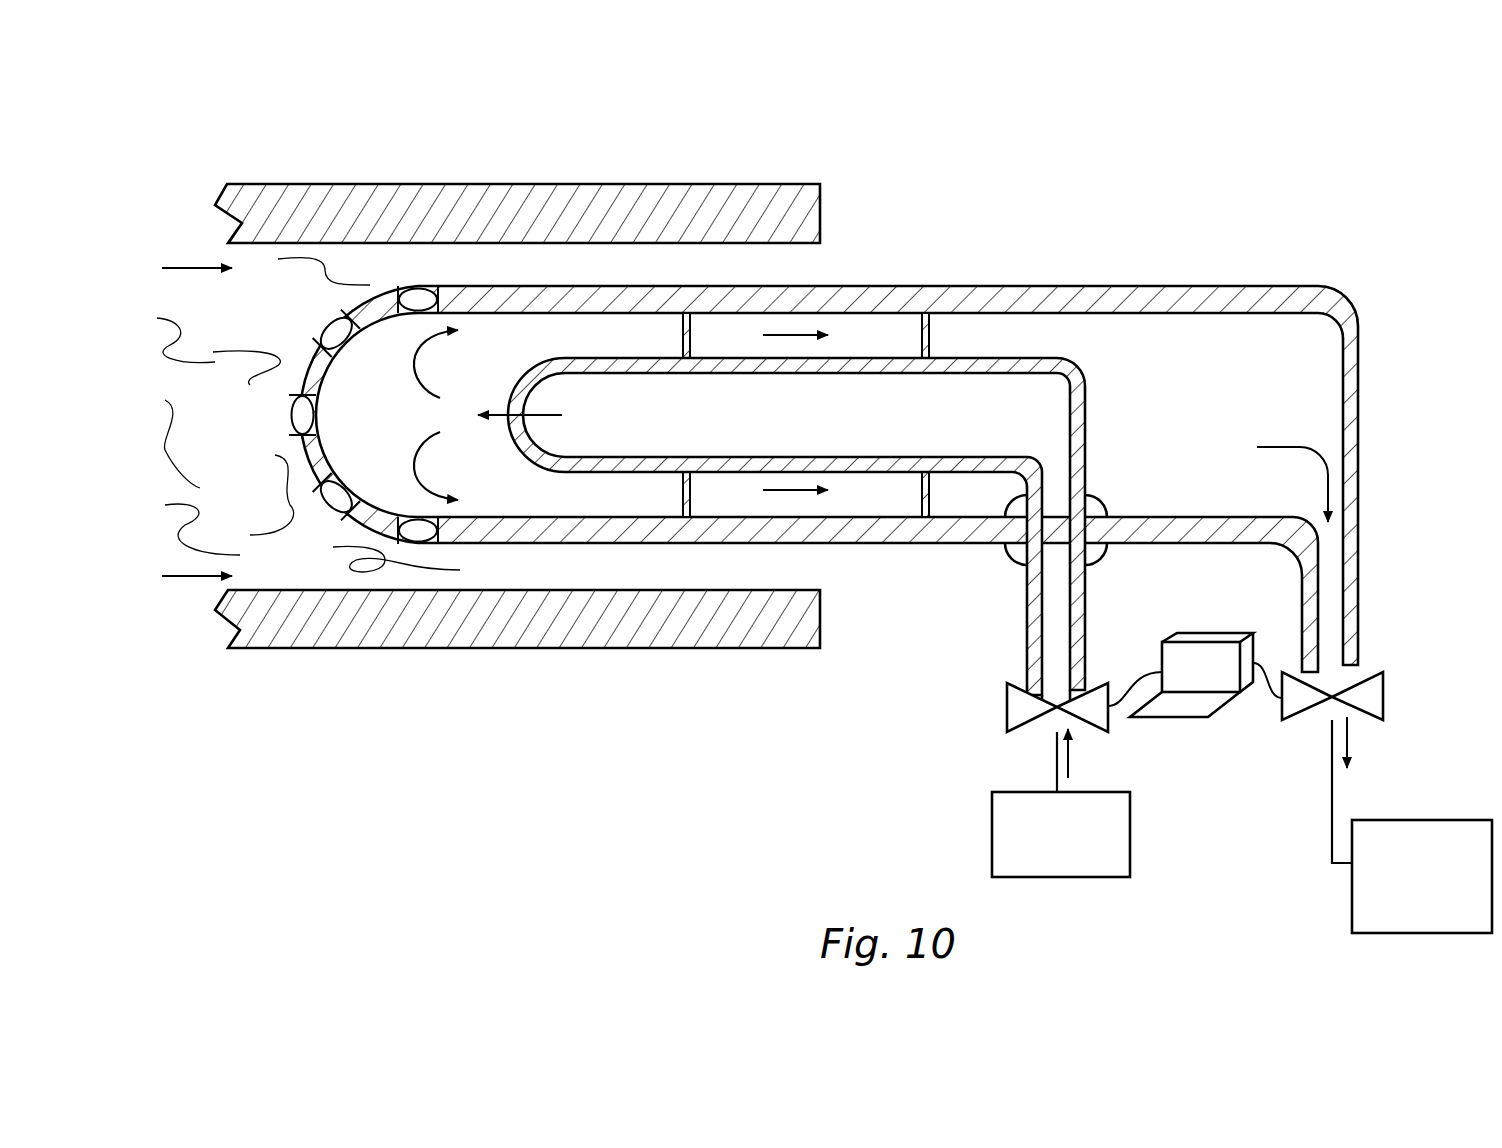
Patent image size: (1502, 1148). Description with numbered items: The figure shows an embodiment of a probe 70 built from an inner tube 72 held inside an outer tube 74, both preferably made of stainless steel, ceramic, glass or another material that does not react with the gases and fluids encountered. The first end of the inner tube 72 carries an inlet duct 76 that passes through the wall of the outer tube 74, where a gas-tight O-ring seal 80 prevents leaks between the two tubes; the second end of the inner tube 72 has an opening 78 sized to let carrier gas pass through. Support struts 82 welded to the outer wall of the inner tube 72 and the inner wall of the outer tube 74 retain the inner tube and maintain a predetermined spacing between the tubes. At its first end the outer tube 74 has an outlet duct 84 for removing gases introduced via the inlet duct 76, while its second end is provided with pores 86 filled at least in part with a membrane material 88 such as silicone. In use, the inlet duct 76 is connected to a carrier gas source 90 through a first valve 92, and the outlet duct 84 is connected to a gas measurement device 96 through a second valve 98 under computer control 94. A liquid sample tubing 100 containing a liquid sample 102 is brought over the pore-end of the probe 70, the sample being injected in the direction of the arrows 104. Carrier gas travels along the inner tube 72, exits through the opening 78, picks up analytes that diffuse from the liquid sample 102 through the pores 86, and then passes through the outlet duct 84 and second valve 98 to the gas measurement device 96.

The probe 70 is at (858, 523).
The inner tube 72 is at (824, 511).
The outer tube 74 is at (791, 436).
The inlet duct 76 is at (1085, 600).
The opening 78 is at (510, 412).
The O-ring seal 80 is at (1108, 548).
The support struts 82 is at (683, 342).
The outlet duct 84 is at (1358, 560).
The pores 86 is at (292, 390).
The membrane material 88 is at (293, 430).
The carrier gas source 90 is at (1130, 830).
The first valve 92 is at (1007, 708).
The computer control 94 is at (1242, 642).
The gas measurement device 96 is at (1472, 820).
The second valve 98 is at (1383, 692).
The liquid sample tubing 100 is at (572, 184).
The liquid sample 102 is at (181, 461).
The arrows 104 is at (205, 272).